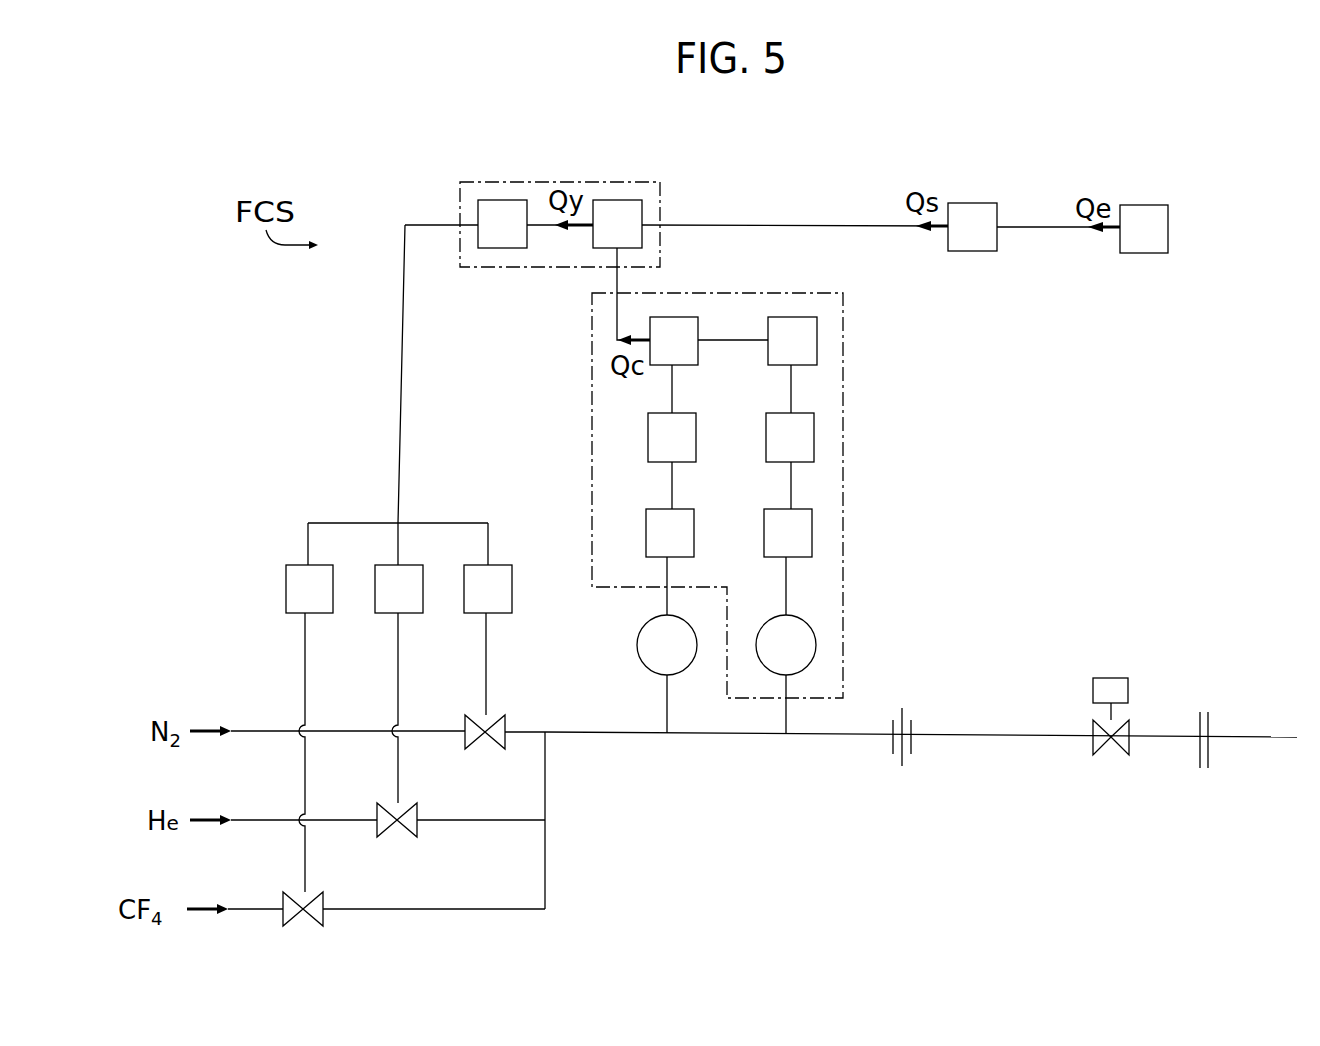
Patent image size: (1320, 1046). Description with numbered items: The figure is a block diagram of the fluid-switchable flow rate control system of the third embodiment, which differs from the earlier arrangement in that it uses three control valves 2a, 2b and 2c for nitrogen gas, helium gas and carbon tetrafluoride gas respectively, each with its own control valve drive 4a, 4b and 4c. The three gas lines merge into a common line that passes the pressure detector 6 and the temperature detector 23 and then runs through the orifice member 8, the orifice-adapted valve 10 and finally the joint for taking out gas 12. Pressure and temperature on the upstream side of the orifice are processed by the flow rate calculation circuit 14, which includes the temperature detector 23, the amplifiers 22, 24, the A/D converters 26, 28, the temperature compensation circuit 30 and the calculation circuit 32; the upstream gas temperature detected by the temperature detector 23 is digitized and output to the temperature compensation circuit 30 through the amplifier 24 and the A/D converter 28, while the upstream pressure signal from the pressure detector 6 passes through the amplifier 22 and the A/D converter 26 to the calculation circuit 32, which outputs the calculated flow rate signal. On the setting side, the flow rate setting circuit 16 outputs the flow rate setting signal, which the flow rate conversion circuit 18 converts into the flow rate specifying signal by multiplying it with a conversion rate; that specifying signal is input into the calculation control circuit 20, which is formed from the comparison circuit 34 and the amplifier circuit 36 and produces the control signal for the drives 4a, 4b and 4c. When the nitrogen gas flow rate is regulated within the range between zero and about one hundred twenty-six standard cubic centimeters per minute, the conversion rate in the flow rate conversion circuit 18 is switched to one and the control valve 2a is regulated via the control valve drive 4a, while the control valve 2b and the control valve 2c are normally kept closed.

The control valve 2a is at (503, 718).
The control valve 2b is at (415, 805).
The control valve 2c is at (321, 895).
The control valve drive 4a is at (499, 600).
The control valve drive 4b is at (405, 600).
The control valve drive 4c is at (315, 600).
The pressure detector 6 is at (637, 647).
The orifice member 8 is at (893, 758).
The orifice-adapted valve 10 is at (1107, 758).
The joint for taking out gas 12 is at (1198, 765).
The flow rate calculation circuit 14 is at (843, 590).
The flow rate setting circuit 16 is at (1140, 218).
The flow rate conversion circuit 18 is at (976, 215).
The calculation control circuit 20 is at (460, 189).
The amplifier 22 is at (656, 530).
The temperature detector 23 is at (816, 647).
The amplifier 24 is at (800, 537).
The A/D converter 26 is at (658, 438).
The A/D converter 28 is at (802, 440).
The temperature compensation circuit 30 is at (805, 342).
The calculation circuit 32 is at (680, 328).
The comparison circuit 34 is at (613, 210).
The amplifier circuit 36 is at (511, 208).